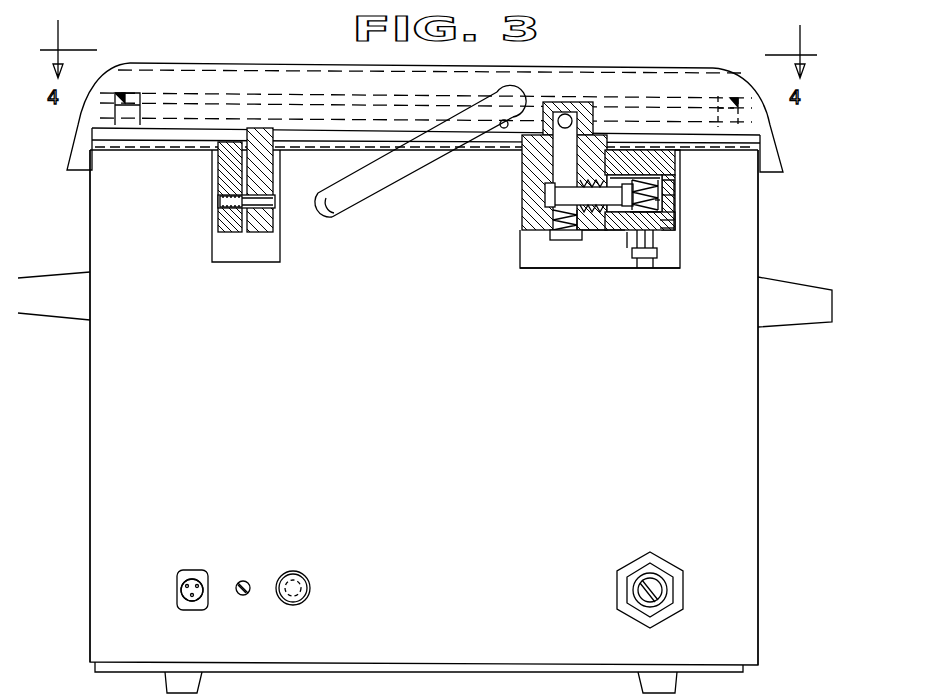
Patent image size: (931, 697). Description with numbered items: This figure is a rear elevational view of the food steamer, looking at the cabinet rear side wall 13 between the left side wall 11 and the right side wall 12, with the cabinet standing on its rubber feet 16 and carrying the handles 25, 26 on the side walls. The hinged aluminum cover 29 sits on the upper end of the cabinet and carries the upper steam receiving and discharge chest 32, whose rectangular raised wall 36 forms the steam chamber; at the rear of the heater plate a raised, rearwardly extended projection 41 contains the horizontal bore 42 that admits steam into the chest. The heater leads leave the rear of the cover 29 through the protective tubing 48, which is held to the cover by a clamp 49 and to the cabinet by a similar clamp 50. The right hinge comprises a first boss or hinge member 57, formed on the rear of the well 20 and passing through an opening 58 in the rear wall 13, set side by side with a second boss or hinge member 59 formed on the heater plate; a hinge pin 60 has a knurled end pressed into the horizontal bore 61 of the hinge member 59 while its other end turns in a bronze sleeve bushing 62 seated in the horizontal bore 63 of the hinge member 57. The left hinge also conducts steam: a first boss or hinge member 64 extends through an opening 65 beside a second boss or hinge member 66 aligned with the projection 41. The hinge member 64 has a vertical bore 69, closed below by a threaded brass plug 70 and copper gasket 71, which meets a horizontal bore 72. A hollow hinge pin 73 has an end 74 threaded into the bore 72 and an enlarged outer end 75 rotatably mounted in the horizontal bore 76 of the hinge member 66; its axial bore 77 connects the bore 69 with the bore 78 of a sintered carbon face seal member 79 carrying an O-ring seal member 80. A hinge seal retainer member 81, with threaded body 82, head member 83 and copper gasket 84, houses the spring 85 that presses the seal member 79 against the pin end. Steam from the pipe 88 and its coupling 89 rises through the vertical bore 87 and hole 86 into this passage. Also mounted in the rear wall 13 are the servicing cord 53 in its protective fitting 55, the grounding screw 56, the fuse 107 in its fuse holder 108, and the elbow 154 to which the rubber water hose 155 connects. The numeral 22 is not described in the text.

The left side wall 11 is at (760, 468).
The right side wall 12 is at (88, 409).
The rear side wall 13 is at (745, 431).
The supporting rubber pads or feet 16 is at (197, 683).
The well 20 is at (424, 423).
The bottom wall 22 is at (419, 679).
The handle 25 is at (780, 320).
The handle 26 is at (70, 316).
The cover 29 is at (235, 64).
The upper steam receiving and discharge chest 32 is at (642, 95).
The raised wall 36 is at (132, 105).
The projection 41 is at (598, 100).
The bore 42 is at (568, 114).
The protective hose or tubing 48 is at (383, 180).
The clamp 49 is at (518, 102).
The clamp 50 is at (331, 219).
The servicing cord 53 is at (177, 597).
The protective fitting 55 is at (200, 572).
The screw 56 is at (246, 581).
The first boss or hinge member 57 is at (233, 232).
The opening 58 is at (212, 252).
The second boss or hinge member 59 is at (273, 226).
The hinge pin 60 is at (220, 203).
The horizontal bore 61 is at (262, 196).
The bronze sleeve bushing 62 is at (224, 208).
The horizontal bore 63 is at (222, 197).
The first boss or hinge member 64 is at (532, 222).
The opening 65 is at (520, 265).
The second boss or hinge member 66 is at (660, 160).
The vertical bore 69 is at (565, 156).
The threaded brass plug 70 is at (553, 237).
The copper gasket 71 is at (550, 238).
The horizontal bore 72 is at (547, 193).
The hinge pin 73 is at (612, 180).
The end 74 is at (598, 232).
The enlarged outer end 75 is at (608, 230).
The horizontal bore 76 is at (662, 212).
The axial bore 77 is at (578, 191).
The bore 78 is at (646, 178).
The seal member 79 is at (622, 232).
The O-ring seal member 80 is at (627, 250).
The hinge seal retainer member 81 is at (680, 190).
The threaded body 82 is at (672, 232).
The head member 83 is at (676, 196).
The copper gasket 84 is at (674, 224).
The spring 85 is at (660, 201).
The hole 86 is at (660, 184).
The vertical bore 87 is at (638, 270).
The pipe 88 is at (665, 235).
The coupling 89 is at (652, 262).
The fuse 107 is at (312, 583).
The fuse holder 108 is at (306, 600).
The elbow 154 is at (640, 566).
The rubber hose 155 is at (633, 593).